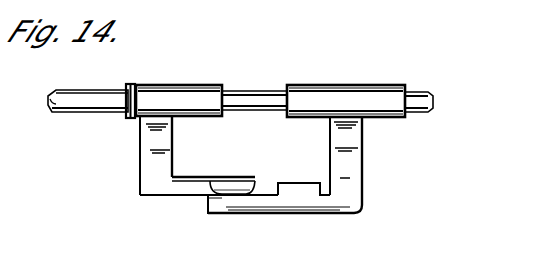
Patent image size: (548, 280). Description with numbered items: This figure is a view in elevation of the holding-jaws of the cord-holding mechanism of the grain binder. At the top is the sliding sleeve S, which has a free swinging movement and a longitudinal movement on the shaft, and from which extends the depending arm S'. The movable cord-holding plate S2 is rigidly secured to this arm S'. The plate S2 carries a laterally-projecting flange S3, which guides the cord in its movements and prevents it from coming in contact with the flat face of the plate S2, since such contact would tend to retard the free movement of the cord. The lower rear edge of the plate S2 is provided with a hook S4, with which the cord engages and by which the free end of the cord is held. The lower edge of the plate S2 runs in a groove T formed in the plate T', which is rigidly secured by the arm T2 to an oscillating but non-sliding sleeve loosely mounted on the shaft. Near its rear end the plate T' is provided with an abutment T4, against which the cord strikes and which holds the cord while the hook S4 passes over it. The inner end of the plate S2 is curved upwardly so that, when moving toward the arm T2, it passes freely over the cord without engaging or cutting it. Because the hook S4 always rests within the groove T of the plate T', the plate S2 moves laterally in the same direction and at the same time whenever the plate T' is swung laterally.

The groove T is at (240, 97).
The sliding sleeve S is at (179, 92).
The depending arm S' is at (165, 155).
The movable cord-holding plate S2 is at (262, 178).
The laterally-projecting flange S3 is at (242, 176).
The hook S4 is at (216, 197).
The plate T' is at (281, 220).
The arm T2 is at (363, 164).
The abutment T4 is at (300, 182).